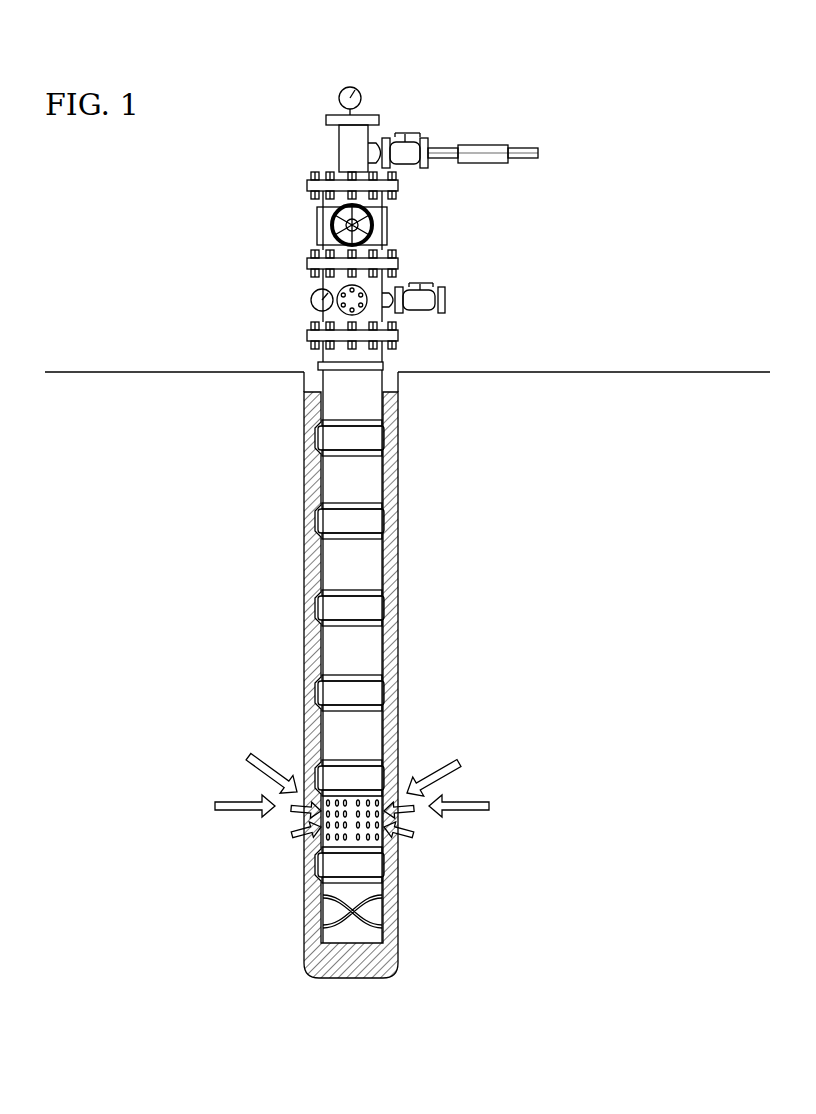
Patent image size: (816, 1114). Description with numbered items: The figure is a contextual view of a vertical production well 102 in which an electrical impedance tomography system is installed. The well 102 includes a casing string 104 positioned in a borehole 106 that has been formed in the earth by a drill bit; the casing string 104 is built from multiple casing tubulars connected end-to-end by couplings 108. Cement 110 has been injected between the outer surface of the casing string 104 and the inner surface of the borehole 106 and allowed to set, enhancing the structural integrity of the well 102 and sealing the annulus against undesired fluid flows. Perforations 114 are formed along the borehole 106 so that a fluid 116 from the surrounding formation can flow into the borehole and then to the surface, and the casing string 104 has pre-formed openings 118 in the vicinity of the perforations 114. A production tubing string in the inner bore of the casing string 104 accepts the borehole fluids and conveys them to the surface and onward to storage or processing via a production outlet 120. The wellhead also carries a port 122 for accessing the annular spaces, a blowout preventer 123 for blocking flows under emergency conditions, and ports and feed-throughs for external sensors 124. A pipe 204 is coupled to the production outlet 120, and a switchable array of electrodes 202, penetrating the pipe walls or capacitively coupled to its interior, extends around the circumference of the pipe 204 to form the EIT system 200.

The production well 102 is at (431, 64).
The casing string 104 is at (386, 403).
The borehole 106 is at (305, 376).
The couplings 108 is at (380, 520).
The cement 110 is at (312, 478).
The perforations 114 is at (386, 814).
The fluid 116 is at (355, 795).
The pre-formed openings 118 is at (383, 842).
The production outlet 120 is at (410, 134).
The port 122 is at (421, 283).
The blowout preventer 123 is at (389, 227).
The external sensors 124 is at (340, 98).
The EIT system 200 is at (598, 50).
The switchable array of electrodes 202 is at (486, 153).
The pipe 204 is at (531, 152).